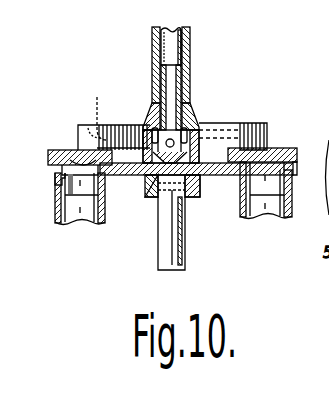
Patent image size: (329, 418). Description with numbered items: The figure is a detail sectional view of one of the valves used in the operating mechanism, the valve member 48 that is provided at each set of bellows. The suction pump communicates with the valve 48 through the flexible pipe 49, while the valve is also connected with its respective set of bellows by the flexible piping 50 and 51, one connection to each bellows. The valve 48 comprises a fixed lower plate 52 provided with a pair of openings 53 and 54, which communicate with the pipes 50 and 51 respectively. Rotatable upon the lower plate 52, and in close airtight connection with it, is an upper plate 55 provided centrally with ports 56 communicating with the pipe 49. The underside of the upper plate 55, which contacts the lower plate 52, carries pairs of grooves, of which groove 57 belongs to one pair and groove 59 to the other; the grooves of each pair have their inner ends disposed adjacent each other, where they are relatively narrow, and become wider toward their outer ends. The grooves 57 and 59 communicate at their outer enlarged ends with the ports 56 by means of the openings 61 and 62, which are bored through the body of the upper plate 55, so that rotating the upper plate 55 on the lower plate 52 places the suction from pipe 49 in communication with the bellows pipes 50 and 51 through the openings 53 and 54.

The valve member 48 is at (297, 165).
The flexible pipe 49 is at (186, 47).
The flexible piping 50 is at (56, 216).
The flexible piping 51 is at (242, 219).
The fixed lower plate 52 is at (209, 174).
The opening 53 is at (56, 182).
The opening 54 is at (291, 188).
The upper plate 55 is at (73, 152).
The ports 56 is at (155, 128).
The groove 57 is at (88, 150).
The groove 59 is at (252, 160).
The opening 61 is at (96, 111).
The opening 62 is at (223, 137).